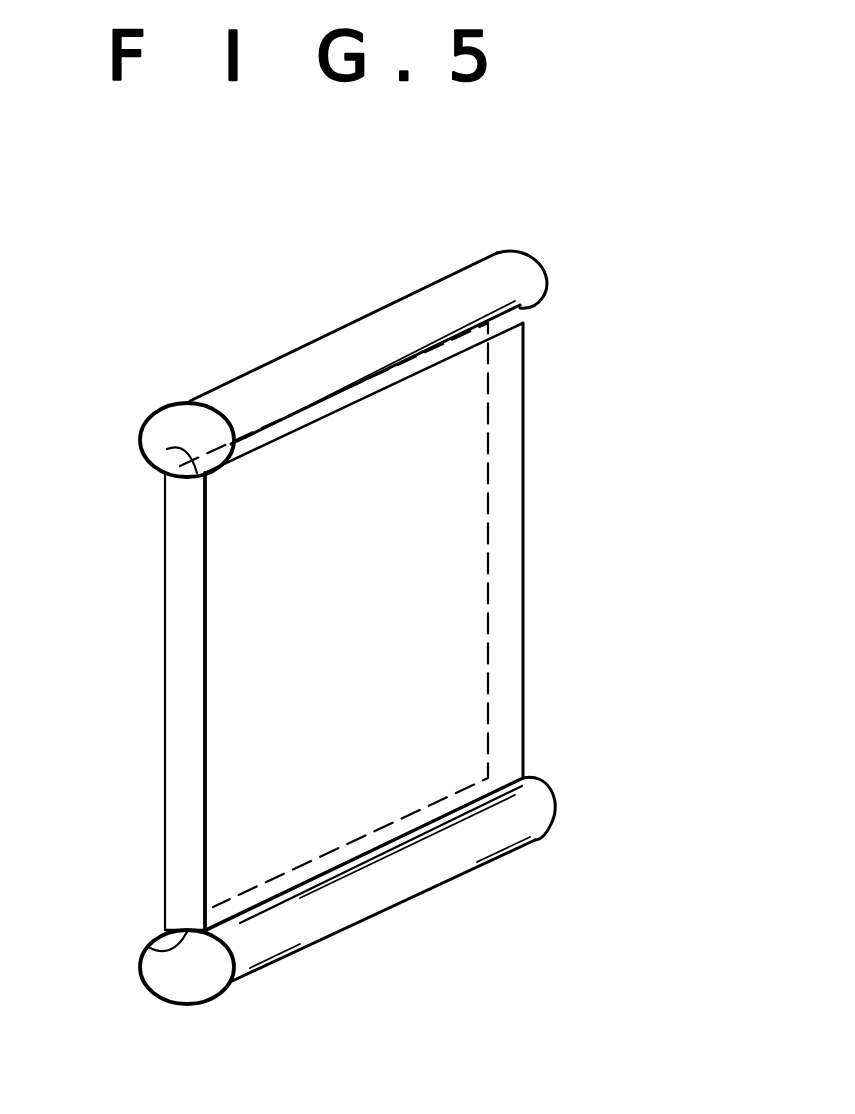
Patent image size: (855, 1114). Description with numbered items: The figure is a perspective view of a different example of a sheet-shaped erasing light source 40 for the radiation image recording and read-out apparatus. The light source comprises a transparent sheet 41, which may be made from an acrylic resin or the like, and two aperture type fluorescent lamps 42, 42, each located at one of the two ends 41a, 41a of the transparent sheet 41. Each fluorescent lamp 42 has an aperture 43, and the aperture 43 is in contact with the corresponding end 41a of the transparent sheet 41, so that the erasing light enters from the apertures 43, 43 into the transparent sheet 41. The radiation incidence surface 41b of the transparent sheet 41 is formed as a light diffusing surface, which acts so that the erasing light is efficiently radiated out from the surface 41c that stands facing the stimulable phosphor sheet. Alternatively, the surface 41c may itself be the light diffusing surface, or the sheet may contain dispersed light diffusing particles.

The sheet-shaped erasing light source 40 is at (602, 317).
The transparent sheet 41 is at (182, 628).
The end of the transparent sheet 41a is at (187, 475).
The radiation incidence surface 41b is at (457, 520).
The surface facing the stimulable phosphor sheet 41c is at (507, 628).
The fluorescent lamp 42 is at (218, 386).
The aperture 43 is at (197, 462).